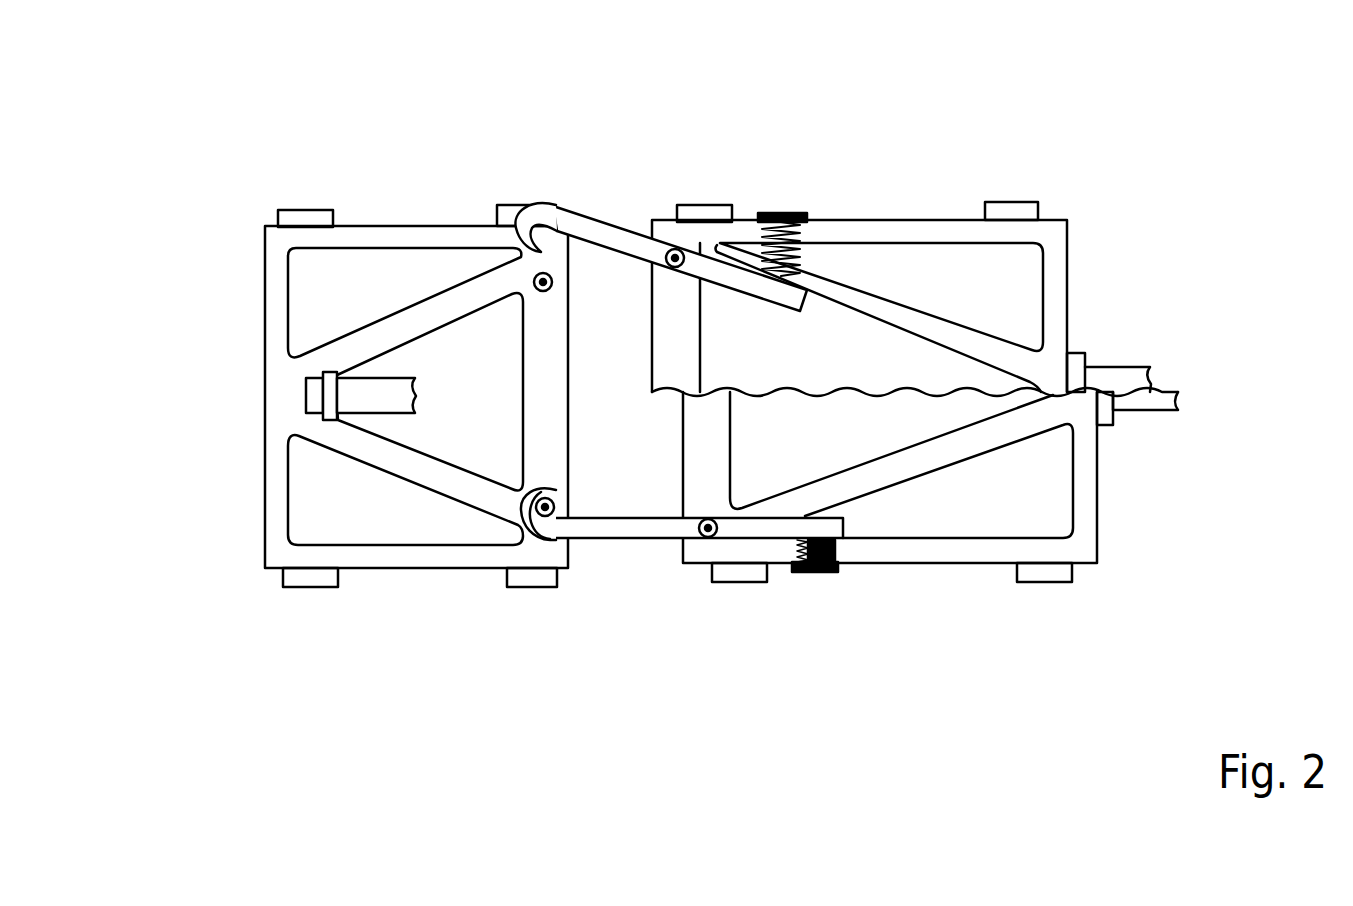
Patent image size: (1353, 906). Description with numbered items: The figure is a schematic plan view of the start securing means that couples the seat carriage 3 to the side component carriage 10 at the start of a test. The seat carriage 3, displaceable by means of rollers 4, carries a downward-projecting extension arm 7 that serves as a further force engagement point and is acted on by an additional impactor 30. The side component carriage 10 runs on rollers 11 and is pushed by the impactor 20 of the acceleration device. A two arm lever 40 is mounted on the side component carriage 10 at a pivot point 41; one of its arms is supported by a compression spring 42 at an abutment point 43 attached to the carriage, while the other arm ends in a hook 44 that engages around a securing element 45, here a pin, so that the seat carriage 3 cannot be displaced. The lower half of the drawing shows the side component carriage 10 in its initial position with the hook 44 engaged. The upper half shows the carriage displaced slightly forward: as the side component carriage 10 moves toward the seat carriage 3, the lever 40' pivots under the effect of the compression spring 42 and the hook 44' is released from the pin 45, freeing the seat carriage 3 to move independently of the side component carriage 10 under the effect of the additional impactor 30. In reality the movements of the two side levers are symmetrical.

The seat carriage 3 is at (388, 189).
The rollers 4 is at (302, 213).
The extension arm 7 is at (313, 390).
The additional impactor 30 is at (380, 395).
The side component carriage 10 is at (923, 188).
The rollers 11 is at (1010, 211).
The impactor 20 is at (1163, 395).
The two arm lever 40 is at (698, 638).
The two arm lever 40' is at (680, 179).
The pivot point 41 is at (675, 258).
The compression spring 42 is at (835, 570).
The abutment point 43 is at (812, 572).
The hook 44 is at (479, 623).
The hook 44' is at (510, 149).
The securing element 45 is at (543, 282).